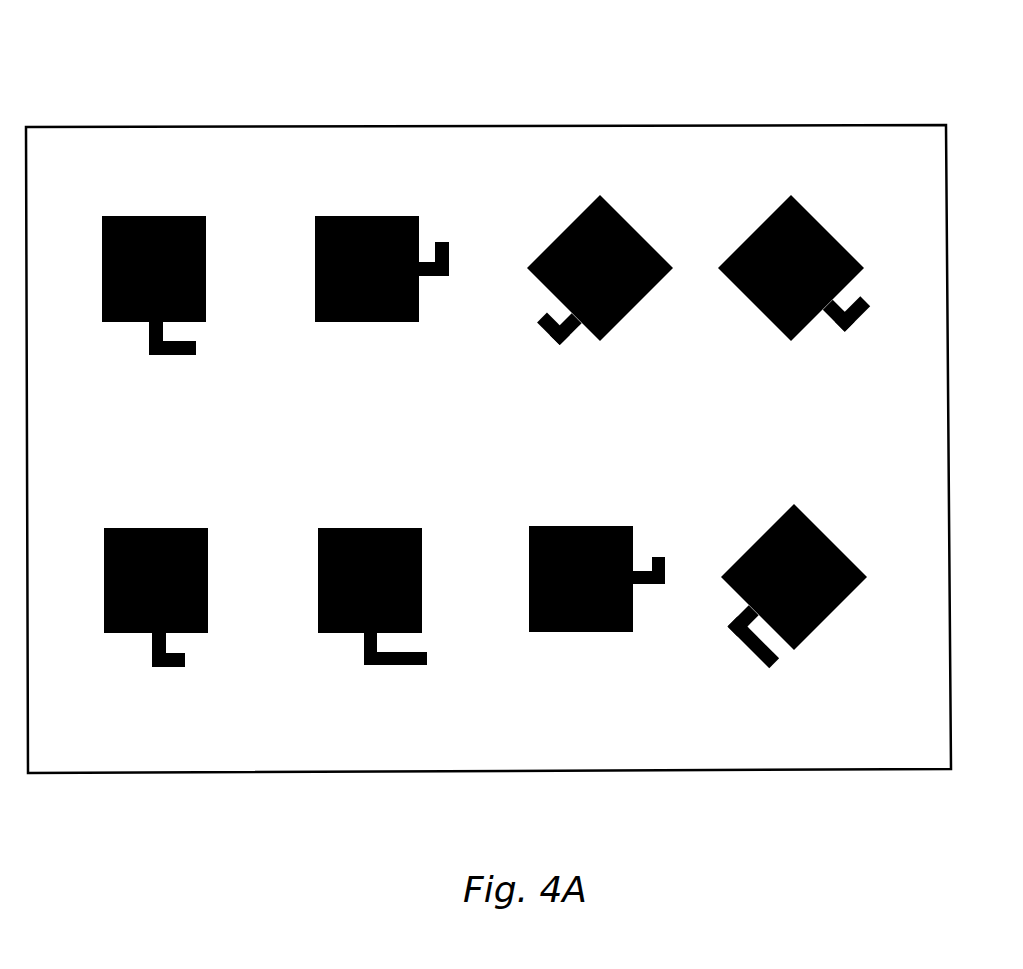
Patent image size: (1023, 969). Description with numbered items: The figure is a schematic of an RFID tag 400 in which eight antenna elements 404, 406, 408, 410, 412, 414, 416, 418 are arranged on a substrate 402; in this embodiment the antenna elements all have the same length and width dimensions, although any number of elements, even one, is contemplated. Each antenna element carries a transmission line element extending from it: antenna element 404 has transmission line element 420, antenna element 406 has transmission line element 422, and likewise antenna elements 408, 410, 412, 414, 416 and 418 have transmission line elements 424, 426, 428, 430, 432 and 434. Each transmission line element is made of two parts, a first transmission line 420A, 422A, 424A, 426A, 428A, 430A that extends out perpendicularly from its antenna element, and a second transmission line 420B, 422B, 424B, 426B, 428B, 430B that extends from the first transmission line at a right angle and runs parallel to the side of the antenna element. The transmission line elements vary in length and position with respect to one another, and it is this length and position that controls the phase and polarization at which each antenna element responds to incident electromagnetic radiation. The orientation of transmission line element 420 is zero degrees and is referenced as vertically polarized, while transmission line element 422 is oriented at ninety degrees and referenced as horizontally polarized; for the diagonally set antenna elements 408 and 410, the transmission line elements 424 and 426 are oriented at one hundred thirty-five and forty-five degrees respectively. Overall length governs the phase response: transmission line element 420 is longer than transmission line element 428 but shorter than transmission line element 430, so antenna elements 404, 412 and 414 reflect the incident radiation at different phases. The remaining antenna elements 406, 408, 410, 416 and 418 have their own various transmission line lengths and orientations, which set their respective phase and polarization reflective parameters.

The RFID tag 400 is at (938, 32).
The substrate 402 is at (912, 748).
The antenna element 404 is at (147, 215).
The antenna element 406 is at (367, 215).
The antenna element 408 is at (632, 226).
The antenna element 410 is at (820, 222).
The antenna element 412 is at (112, 636).
The antenna element 414 is at (330, 636).
The antenna element 416 is at (576, 634).
The antenna element 418 is at (818, 636).
The transmission line element 420 is at (133, 384).
The first transmission line 420A is at (148, 338).
The second transmission line 420B is at (164, 356).
The transmission line element 422 is at (455, 287).
The first transmission line 422A is at (430, 278).
The second transmission line 422B is at (448, 241).
The transmission line element 424 is at (595, 300).
The first transmission line 424A is at (566, 329).
The second transmission line 424B is at (546, 316).
The transmission line element 426 is at (857, 315).
The first transmission line 426A is at (839, 316).
The second transmission line 426B is at (866, 300).
The transmission line element 428 is at (180, 688).
The first transmission line 428A is at (150, 645).
The second transmission line 428B is at (186, 660).
The transmission line element 430 is at (422, 693).
The first transmission line 430A is at (366, 645).
The second transmission line 430B is at (429, 659).
The transmission line element 432 is at (668, 562).
The transmission line element 434 is at (746, 664).